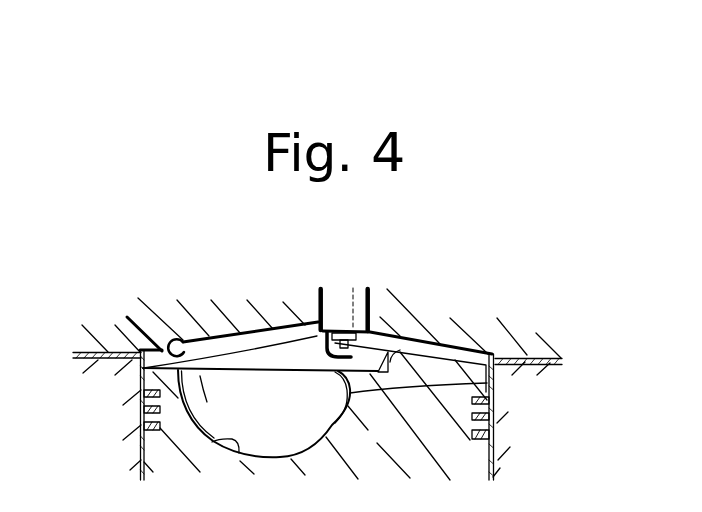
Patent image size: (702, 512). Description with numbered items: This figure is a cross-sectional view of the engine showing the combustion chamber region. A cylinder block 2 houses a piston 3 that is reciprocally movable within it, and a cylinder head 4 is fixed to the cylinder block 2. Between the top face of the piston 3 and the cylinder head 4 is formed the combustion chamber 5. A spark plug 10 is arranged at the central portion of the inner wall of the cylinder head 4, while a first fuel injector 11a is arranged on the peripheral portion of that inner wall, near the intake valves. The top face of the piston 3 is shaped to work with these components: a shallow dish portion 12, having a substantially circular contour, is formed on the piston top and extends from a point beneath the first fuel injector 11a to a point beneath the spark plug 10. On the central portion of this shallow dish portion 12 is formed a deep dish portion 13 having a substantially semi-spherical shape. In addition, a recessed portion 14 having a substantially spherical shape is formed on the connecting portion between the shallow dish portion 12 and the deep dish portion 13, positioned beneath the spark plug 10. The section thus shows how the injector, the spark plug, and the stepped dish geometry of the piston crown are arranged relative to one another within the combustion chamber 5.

The cylinder block 2 is at (507, 465).
The piston 3 is at (471, 452).
The cylinder head 4 is at (484, 335).
The combustion chamber 5 is at (240, 329).
The spark plug 10 is at (318, 304).
The first fuel injector 11a is at (142, 318).
The shallow dish portion 12 is at (404, 353).
The deep dish portion 13 is at (212, 442).
The recessed portion 14 is at (493, 387).